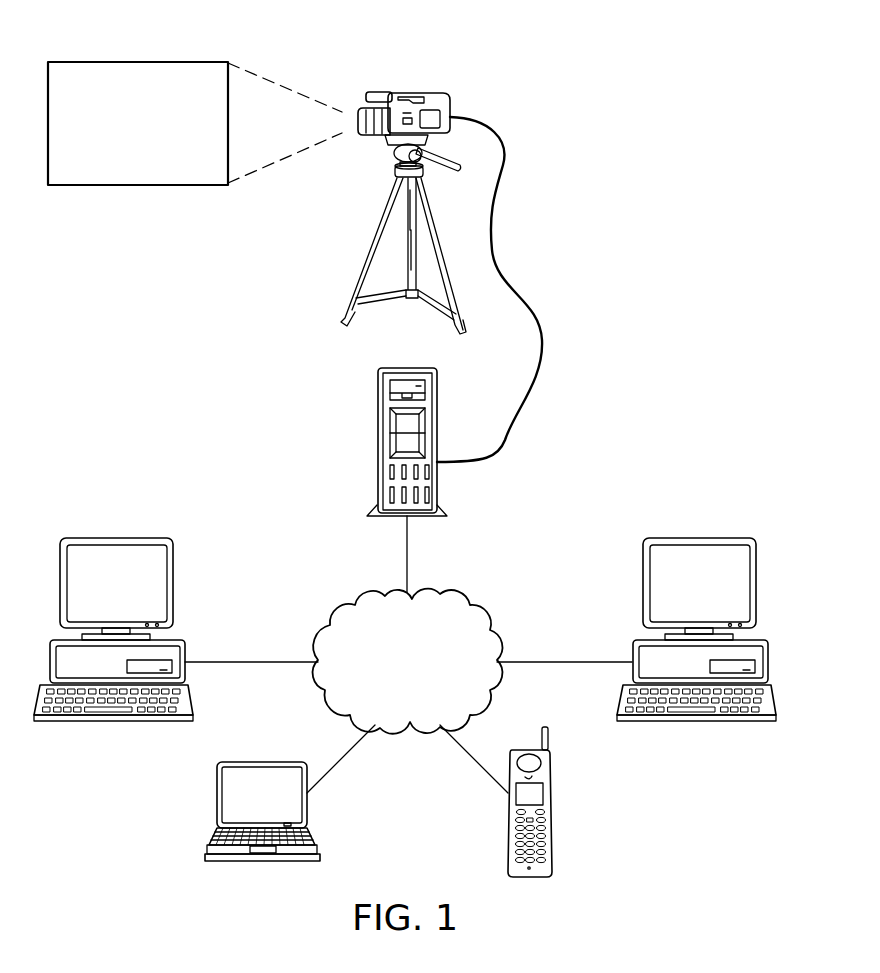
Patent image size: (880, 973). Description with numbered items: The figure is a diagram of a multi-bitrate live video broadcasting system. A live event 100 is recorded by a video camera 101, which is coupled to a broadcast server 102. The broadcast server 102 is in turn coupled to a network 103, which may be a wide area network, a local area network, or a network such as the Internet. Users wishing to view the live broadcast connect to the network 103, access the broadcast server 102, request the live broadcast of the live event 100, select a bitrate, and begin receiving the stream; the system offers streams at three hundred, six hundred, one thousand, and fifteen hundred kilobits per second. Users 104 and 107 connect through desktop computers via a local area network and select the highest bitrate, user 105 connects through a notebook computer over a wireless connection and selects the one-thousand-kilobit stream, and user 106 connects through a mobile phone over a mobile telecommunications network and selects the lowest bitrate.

The live event 100 is at (137, 62).
The video camera 101 is at (416, 92).
The broadcast server 102 is at (378, 449).
The network 103 is at (469, 606).
The user 104 is at (116, 538).
The user 105 is at (217, 797).
The user 106 is at (552, 814).
The user 107 is at (685, 537).